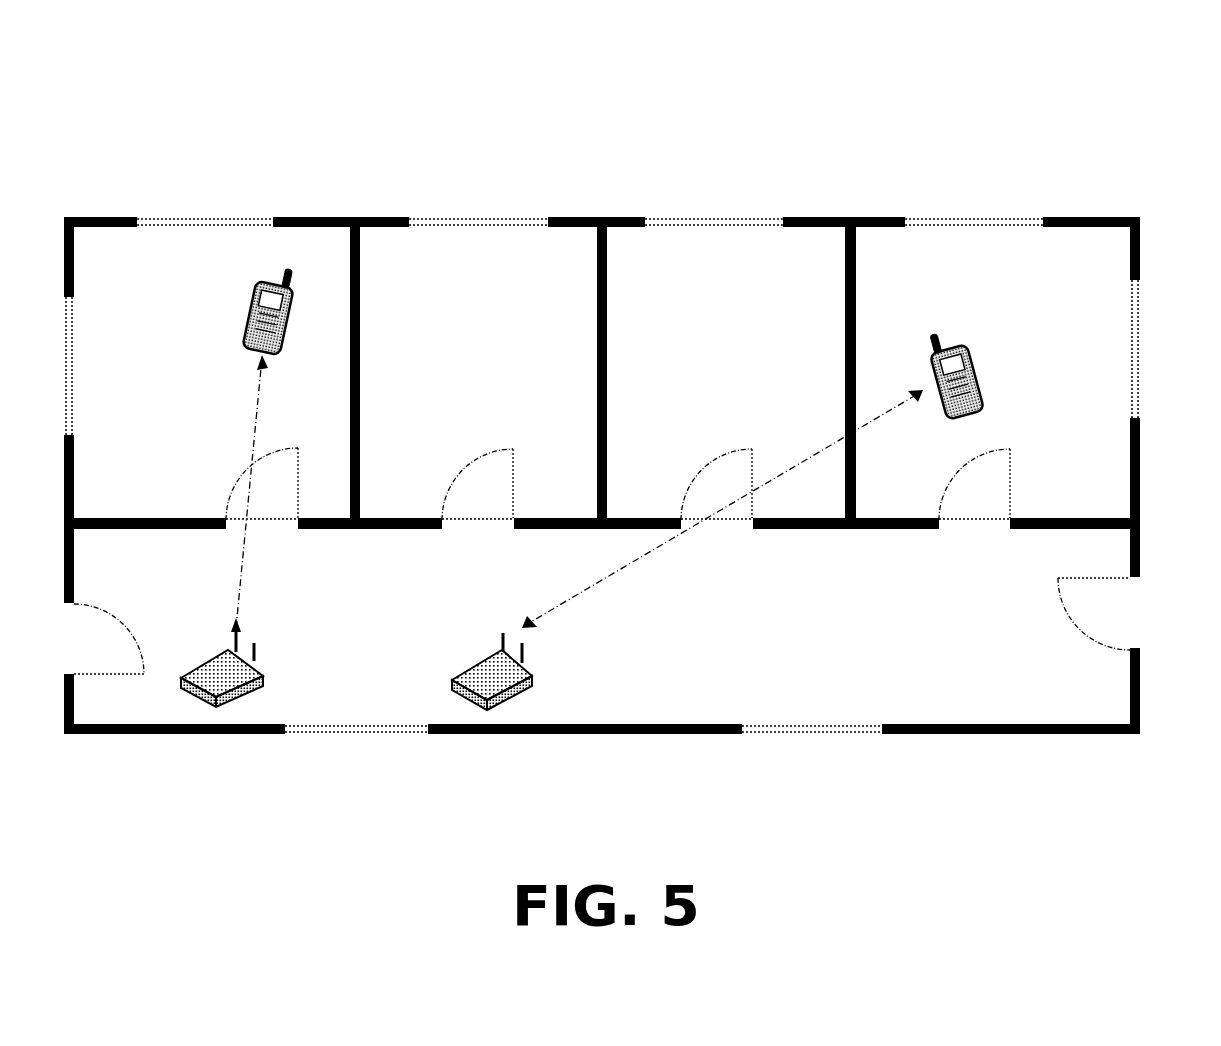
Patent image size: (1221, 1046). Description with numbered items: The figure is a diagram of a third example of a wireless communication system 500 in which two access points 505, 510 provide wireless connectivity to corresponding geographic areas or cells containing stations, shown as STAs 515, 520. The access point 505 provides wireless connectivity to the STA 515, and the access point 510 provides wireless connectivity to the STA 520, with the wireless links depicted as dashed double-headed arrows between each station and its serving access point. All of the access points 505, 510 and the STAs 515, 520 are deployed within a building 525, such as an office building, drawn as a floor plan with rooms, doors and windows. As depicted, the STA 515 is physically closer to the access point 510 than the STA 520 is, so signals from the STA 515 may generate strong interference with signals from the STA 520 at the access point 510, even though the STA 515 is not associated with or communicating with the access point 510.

The wireless communication system 500 is at (1100, 110).
The access point 505 is at (263, 677).
The access point 510 is at (532, 680).
The STA 515 is at (243, 325).
The STA 520 is at (978, 385).
The building 525 is at (613, 734).